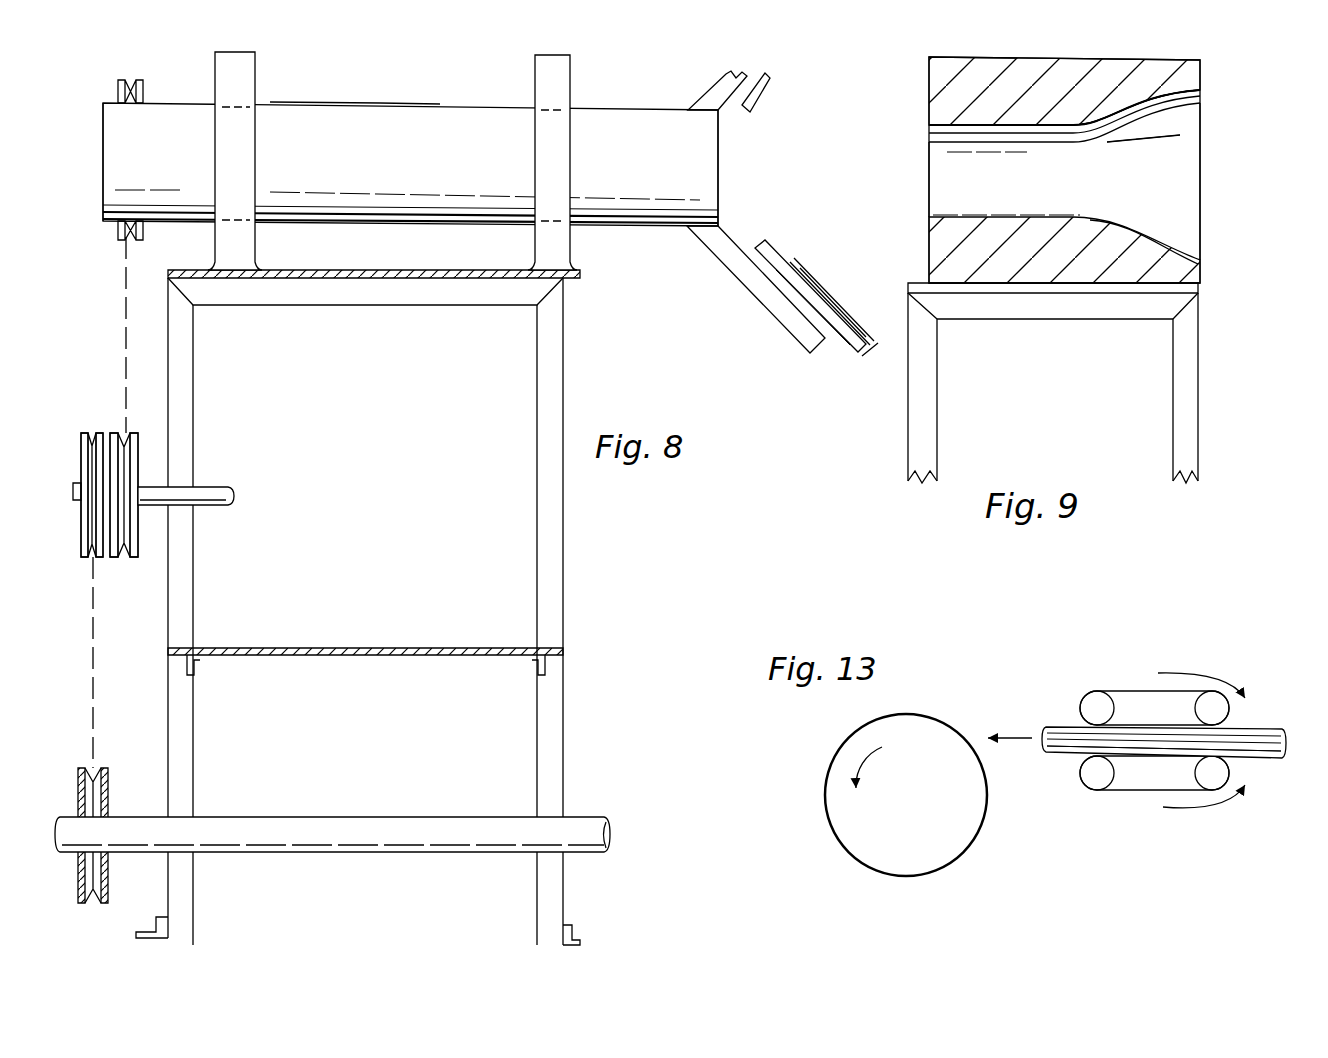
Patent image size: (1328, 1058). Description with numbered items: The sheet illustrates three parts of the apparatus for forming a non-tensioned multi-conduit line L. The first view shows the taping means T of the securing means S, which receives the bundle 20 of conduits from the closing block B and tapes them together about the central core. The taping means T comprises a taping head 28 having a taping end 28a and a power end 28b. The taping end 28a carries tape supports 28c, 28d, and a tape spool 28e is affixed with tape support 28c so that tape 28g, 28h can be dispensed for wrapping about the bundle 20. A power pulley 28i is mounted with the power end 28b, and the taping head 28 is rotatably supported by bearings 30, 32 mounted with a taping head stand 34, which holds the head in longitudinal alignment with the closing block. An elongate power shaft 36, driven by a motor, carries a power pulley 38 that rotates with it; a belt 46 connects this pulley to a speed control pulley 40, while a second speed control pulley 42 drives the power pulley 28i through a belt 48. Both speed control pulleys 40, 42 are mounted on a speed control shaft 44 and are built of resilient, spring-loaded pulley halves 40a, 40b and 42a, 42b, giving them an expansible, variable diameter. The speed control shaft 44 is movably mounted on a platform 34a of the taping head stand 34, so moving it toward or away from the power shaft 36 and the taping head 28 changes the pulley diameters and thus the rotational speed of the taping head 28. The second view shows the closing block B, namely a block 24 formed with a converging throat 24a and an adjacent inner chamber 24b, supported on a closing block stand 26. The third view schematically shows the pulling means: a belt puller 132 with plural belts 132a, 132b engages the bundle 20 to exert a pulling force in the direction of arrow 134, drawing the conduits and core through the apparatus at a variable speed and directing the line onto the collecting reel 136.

In FIG. 13, the bundle 20 is at (1260, 727).
In FIG. 9, the block 24 is at (1204, 275).
In FIG. 9, the converging throat 24a is at (1184, 200).
In FIG. 9, the inner chamber 24b is at (990, 194).
In FIG. 9, the closing block stand 26 is at (1204, 366).
In FIG. 8, the taping head 28 is at (444, 140).
In FIG. 8, the taping end 28a is at (652, 168).
In FIG. 8, the power end 28b is at (176, 158).
In FIG. 8, the tape support 28c is at (757, 288).
In FIG. 8, the tape support 28d is at (720, 80).
In FIG. 8, the tape spool 28e is at (800, 270).
In FIG. 8, the tape 28g is at (760, 245).
In FIG. 8, the tape 28h is at (756, 92).
In FIG. 8, the power pulley 28i is at (143, 92).
In FIG. 8, the bearing 30 is at (233, 242).
In FIG. 8, the bearing 32 is at (550, 242).
In FIG. 8, the taping head stand 34 is at (557, 336).
In FIG. 8, the platform 34a is at (430, 646).
In FIG. 8, the power shaft 36 is at (275, 828).
In FIG. 8, the power pulley 38 is at (100, 793).
In FIG. 8, the speed control pulley 40 is at (95, 430).
In FIG. 8, the pulley half 40a is at (88, 540).
In FIG. 8, the pulley half 40b is at (99, 548).
In FIG. 8, the speed control pulley 42 is at (142, 530).
In FIG. 8, the pulley half 42a is at (114, 442).
In FIG. 8, the pulley half 42b is at (132, 452).
In FIG. 8, the speed control shaft 44 is at (210, 490).
In FIG. 8, the belt 46 is at (95, 633).
In FIG. 8, the belt 48 is at (126, 257).
In FIG. 8, the securing means S is at (318, 101).
In FIG. 9, the securing means S is at (1204, 108).
In FIG. 8, the taping means T is at (392, 101).
In FIG. 9, the closing block B is at (1204, 135).
In FIG. 13, the multi-conduit line L is at (1265, 762).
In FIG. 13, the belt puller 132 is at (1106, 792).
In FIG. 13, the belt 132a is at (1081, 713).
In FIG. 13, the belt 132b is at (1150, 792).
In FIG. 13, the arrow 134 is at (1013, 738).
In FIG. 13, the collecting reel 136 is at (867, 842).